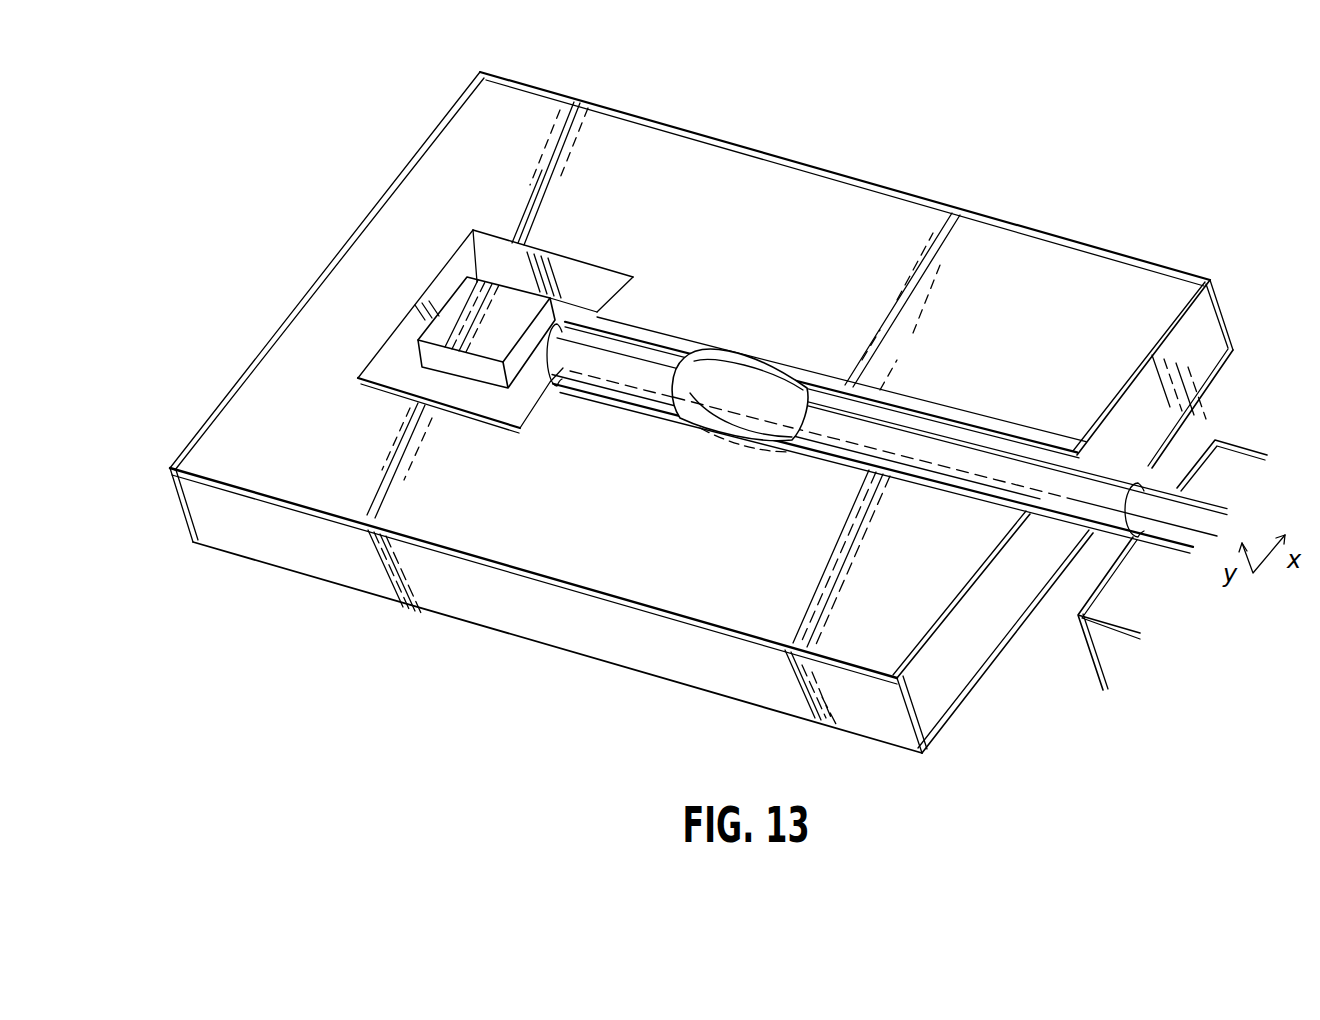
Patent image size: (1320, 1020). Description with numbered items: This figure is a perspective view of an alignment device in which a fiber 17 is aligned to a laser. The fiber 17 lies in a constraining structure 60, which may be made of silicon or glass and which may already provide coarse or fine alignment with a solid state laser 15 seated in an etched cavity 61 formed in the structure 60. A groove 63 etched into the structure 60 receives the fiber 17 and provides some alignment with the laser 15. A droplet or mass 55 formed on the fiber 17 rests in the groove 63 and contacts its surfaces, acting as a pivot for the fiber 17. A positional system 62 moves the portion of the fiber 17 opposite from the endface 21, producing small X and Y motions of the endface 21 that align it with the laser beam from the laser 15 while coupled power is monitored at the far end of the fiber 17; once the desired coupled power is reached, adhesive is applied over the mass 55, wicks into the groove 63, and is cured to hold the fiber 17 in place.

The solid state laser 15 is at (465, 298).
The fiber 17 is at (1120, 476).
The endface 21 is at (550, 347).
The mass 55 is at (785, 350).
The constraining structure 60 is at (1125, 293).
The etched cavity 61 is at (523, 388).
The positional system 62 is at (1148, 607).
The groove 63 is at (932, 418).